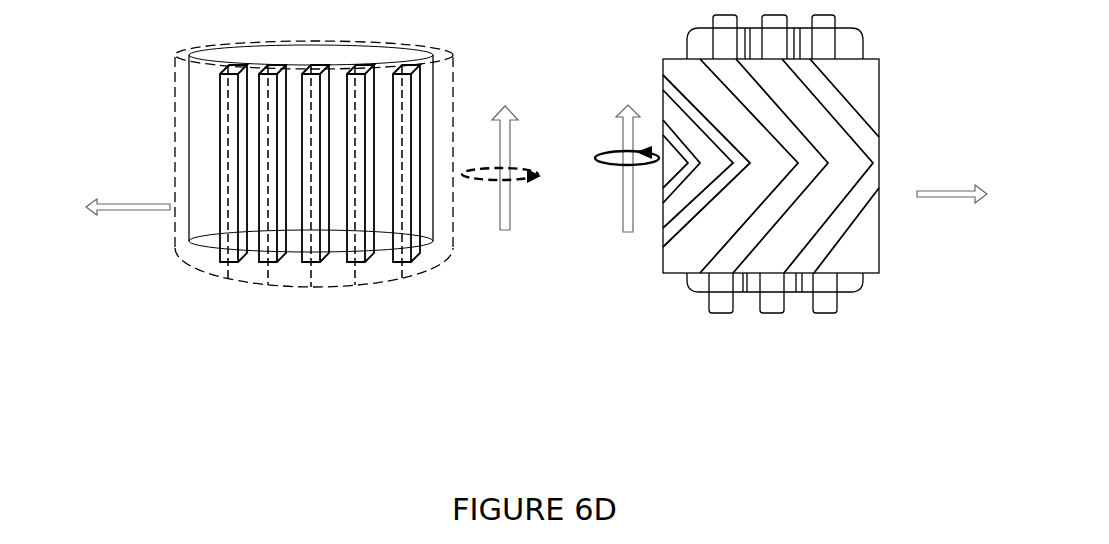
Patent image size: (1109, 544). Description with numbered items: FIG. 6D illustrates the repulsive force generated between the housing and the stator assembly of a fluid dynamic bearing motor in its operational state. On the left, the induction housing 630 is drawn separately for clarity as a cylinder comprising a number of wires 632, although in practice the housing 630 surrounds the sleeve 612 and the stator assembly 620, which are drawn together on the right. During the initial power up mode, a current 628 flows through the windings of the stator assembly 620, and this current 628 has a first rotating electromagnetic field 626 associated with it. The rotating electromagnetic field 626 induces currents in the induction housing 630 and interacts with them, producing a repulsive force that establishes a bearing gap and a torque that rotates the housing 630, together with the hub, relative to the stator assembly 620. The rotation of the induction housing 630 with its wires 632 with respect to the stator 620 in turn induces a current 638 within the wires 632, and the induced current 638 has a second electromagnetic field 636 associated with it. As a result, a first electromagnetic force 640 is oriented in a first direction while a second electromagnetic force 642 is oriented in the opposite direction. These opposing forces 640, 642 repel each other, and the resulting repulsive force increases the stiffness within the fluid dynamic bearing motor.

The sleeve 612 is at (866, 243).
The stator assembly 620 is at (866, 42).
The first rotating electromagnetic field 626 is at (603, 148).
The current 628 is at (625, 195).
The induction housing 630 is at (208, 197).
The wires 632 is at (403, 277).
The second electromagnetic field 636 is at (482, 182).
The induced current 638 is at (509, 153).
The first electromagnetic force 640 is at (963, 190).
The second electromagnetic force 642 is at (135, 202).